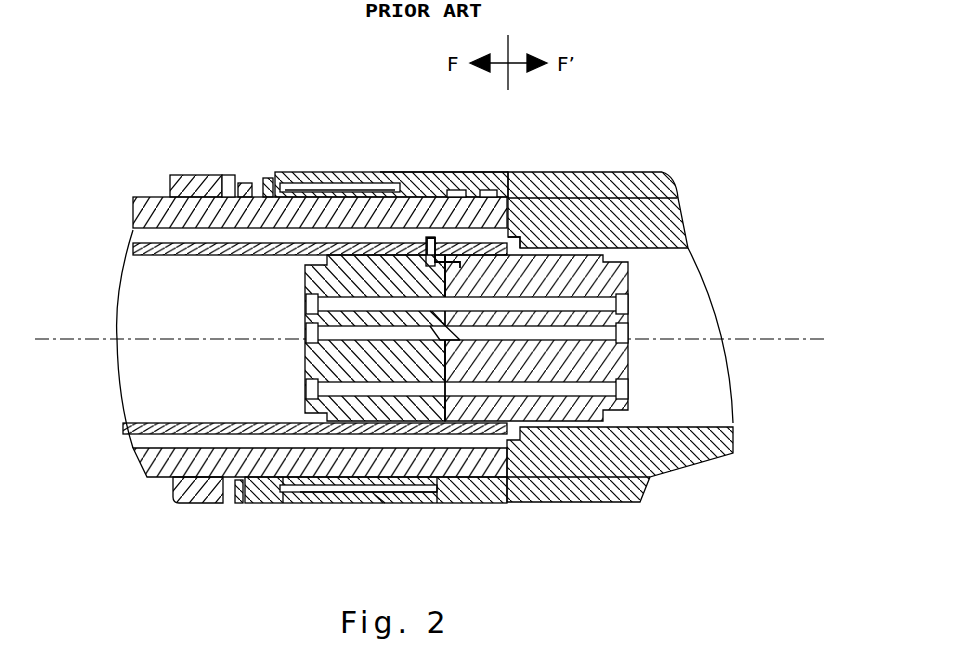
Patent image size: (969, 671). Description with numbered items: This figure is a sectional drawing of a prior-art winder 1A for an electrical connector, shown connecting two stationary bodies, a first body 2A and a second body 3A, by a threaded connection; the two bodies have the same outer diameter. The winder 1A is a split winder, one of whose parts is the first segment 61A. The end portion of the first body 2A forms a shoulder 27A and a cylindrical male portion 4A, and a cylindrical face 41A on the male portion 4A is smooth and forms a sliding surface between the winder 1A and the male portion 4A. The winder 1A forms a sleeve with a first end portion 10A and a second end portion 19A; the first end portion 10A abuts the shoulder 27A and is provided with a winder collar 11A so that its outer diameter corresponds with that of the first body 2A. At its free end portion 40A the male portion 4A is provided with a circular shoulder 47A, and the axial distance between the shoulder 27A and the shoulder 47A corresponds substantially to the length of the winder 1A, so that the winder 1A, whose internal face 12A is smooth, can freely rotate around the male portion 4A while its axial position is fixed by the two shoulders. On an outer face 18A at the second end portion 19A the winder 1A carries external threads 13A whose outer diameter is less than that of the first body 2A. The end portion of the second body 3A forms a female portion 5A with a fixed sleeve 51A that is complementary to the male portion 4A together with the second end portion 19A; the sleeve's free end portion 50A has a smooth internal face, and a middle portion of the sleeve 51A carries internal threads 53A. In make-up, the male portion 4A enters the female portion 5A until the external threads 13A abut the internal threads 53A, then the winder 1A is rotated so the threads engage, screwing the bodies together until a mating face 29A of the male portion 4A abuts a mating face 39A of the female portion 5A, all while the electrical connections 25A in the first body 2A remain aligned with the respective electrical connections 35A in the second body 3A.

The winder 1A is at (285, 497).
The first body 2A is at (188, 207).
The second body 3A is at (627, 210).
The cylindrical male portion 4A is at (253, 200).
The female portion 5A is at (485, 185).
The first end portion 10A is at (230, 498).
The winder collar 11A is at (268, 493).
The internal face 12A is at (365, 183).
The external threads 13A is at (383, 500).
The outer face 18A is at (307, 500).
The second end portion 19A is at (427, 503).
The electrical connections 25A is at (310, 330).
The shoulder 27A is at (230, 190).
The mating face 29A is at (505, 195).
The electrical connections 35A is at (628, 320).
The mating face 39A is at (497, 200).
The free end portion 40A is at (448, 190).
The cylindrical face 41A is at (380, 500).
The circular shoulder 47A is at (403, 178).
The free end portion 50A is at (292, 497).
The fixed sleeve 51A is at (380, 188).
The internal threads 53A is at (247, 197).
The first segment 61A is at (317, 187).